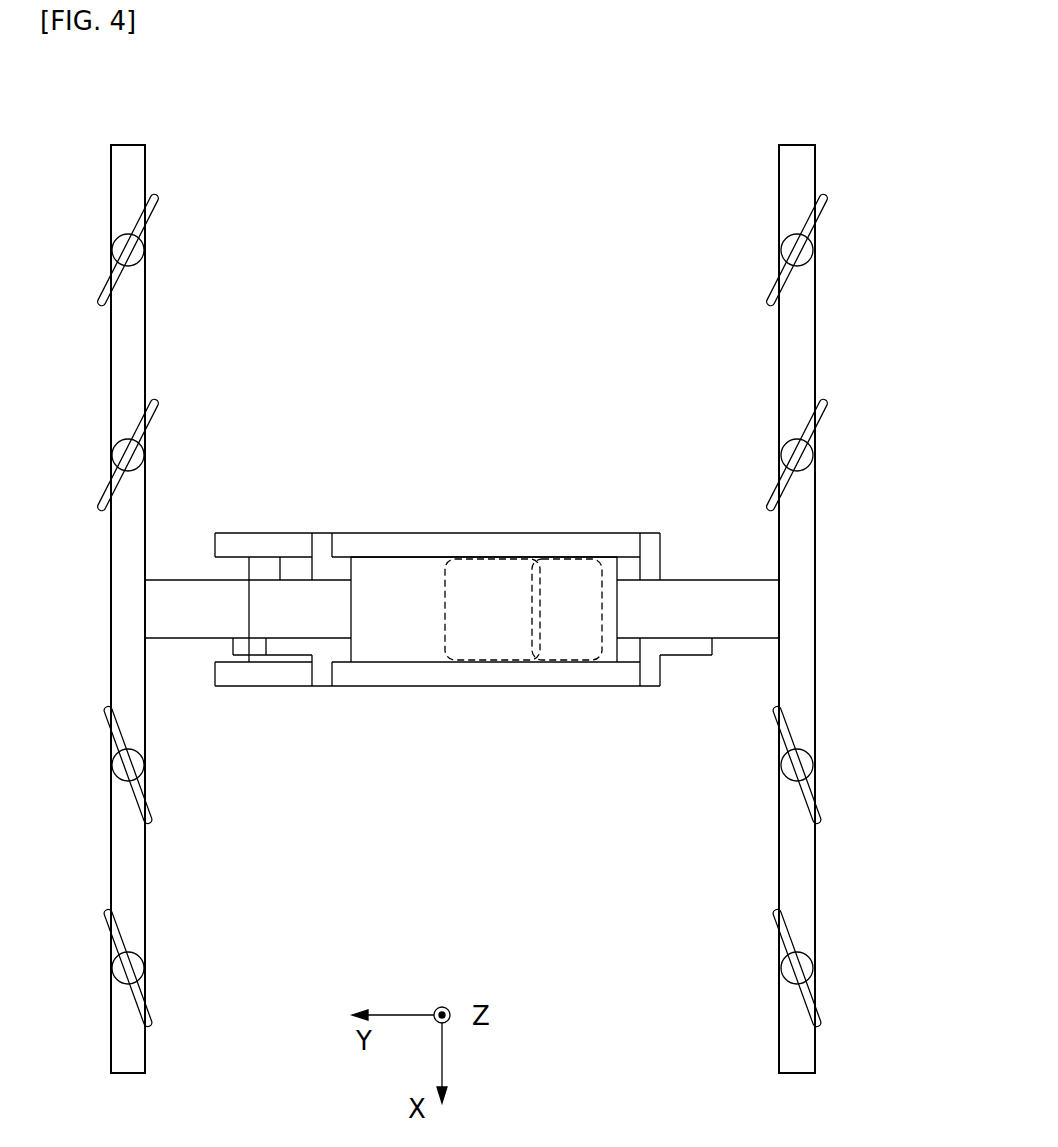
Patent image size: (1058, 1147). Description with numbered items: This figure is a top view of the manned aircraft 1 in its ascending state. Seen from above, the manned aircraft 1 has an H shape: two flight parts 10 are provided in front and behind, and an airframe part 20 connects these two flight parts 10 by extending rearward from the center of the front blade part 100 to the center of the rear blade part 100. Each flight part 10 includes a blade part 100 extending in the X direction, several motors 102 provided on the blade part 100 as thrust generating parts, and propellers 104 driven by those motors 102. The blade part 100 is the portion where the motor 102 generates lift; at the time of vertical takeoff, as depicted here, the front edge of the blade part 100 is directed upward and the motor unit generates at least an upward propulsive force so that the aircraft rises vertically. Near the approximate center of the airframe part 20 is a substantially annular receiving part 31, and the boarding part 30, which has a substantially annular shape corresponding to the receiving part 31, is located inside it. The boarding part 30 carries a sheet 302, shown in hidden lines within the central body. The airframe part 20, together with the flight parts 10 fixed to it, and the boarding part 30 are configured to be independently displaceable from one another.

The manned aircraft 1 is at (505, 493).
The flight part 10 is at (150, 378).
The airframe part 20 is at (172, 578).
The boarding part 30 is at (387, 558).
The receiving part 31 is at (450, 540).
The blade part 100 is at (118, 606).
The motor 102 is at (112, 240).
The propeller 104 is at (157, 199).
The sheet 302 is at (516, 662).